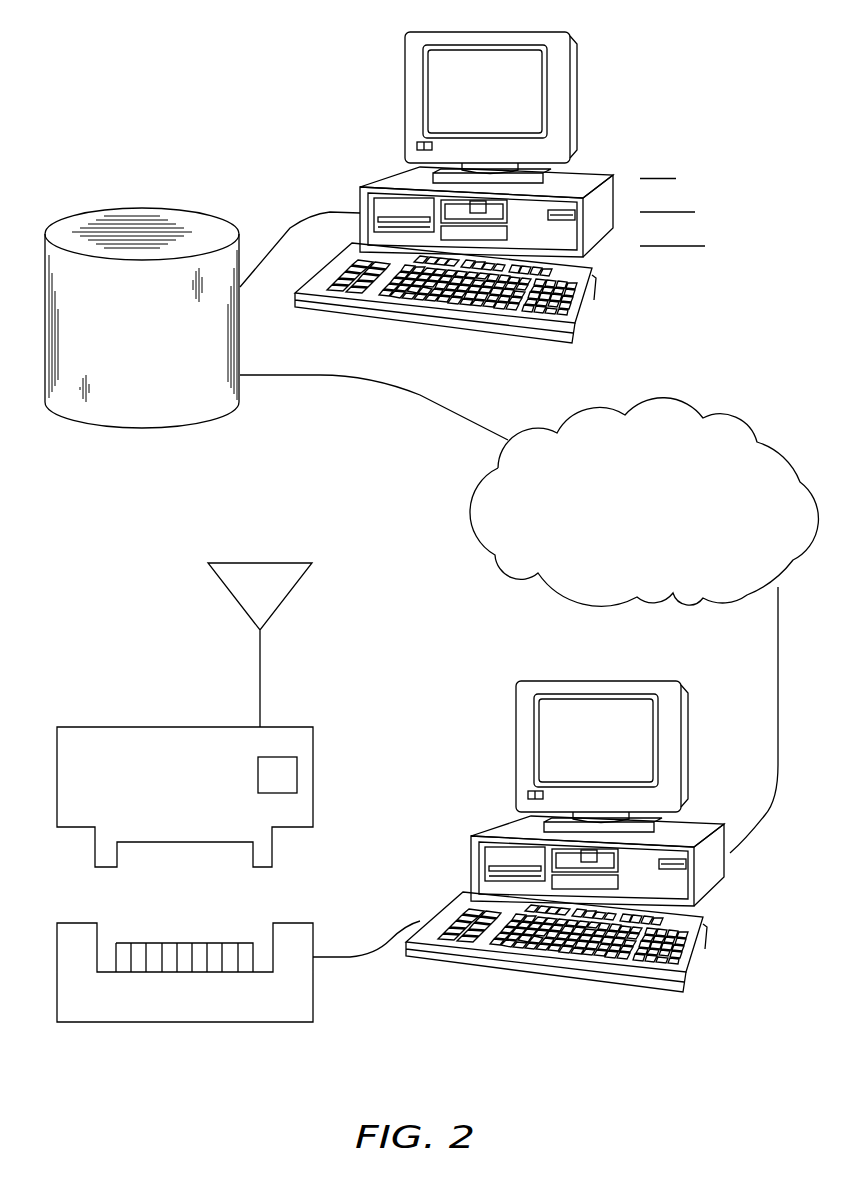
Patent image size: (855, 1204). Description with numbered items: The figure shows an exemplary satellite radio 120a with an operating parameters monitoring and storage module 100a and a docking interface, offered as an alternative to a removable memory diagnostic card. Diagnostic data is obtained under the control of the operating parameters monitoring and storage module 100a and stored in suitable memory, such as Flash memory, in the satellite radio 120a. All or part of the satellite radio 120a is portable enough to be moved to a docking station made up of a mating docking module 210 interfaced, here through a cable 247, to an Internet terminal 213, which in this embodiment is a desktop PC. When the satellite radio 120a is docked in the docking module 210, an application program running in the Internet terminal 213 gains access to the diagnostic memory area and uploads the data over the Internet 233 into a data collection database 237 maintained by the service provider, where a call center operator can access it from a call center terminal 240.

The call center terminal 240 is at (580, 101).
The data collection database 237 is at (190, 427).
The Internet 233 is at (503, 561).
The satellite radio 120a is at (115, 727).
The operating parameters monitoring and storage module 100a is at (298, 773).
The docking module 210 is at (250, 1023).
The cable 247 is at (373, 933).
The Internet terminal 213 is at (505, 822).